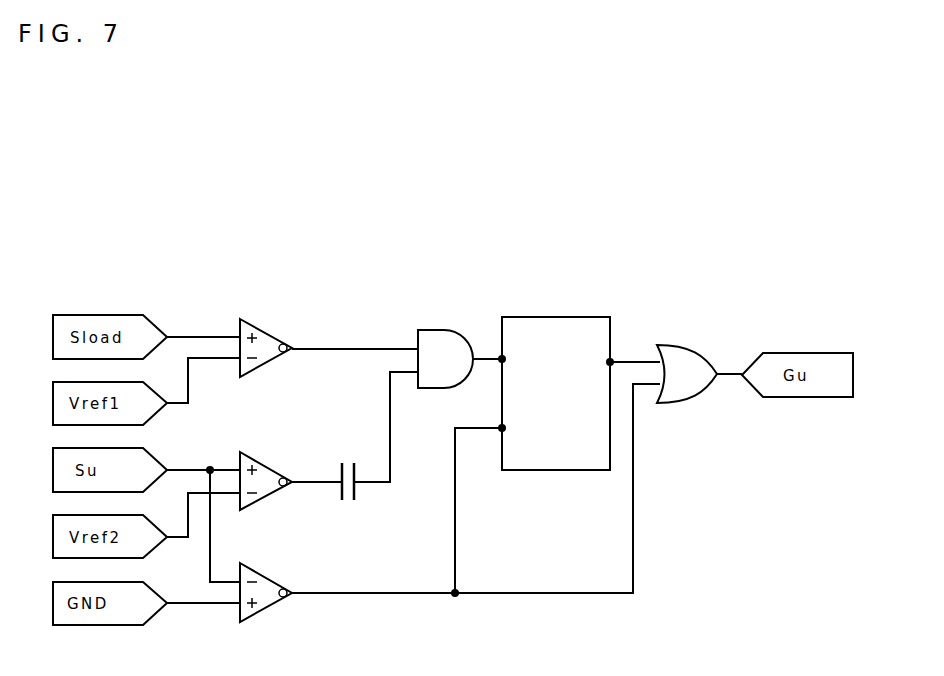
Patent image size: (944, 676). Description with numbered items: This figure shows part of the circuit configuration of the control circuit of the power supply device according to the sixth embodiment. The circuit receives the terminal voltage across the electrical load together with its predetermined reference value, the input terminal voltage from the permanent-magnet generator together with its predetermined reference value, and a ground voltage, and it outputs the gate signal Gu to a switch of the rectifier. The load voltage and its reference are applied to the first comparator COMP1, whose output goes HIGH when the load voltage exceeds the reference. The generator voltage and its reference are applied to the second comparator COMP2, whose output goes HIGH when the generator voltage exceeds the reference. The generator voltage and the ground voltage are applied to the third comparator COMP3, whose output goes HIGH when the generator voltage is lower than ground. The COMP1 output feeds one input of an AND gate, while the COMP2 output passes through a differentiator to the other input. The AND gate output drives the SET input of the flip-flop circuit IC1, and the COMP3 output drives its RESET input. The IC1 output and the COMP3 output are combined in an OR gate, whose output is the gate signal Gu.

The first comparator COMP1 is at (245, 318).
The second comparator COMP2 is at (245, 452).
The third comparator COMP3 is at (247, 563).
The flip-flop circuit IC1 is at (523, 327).